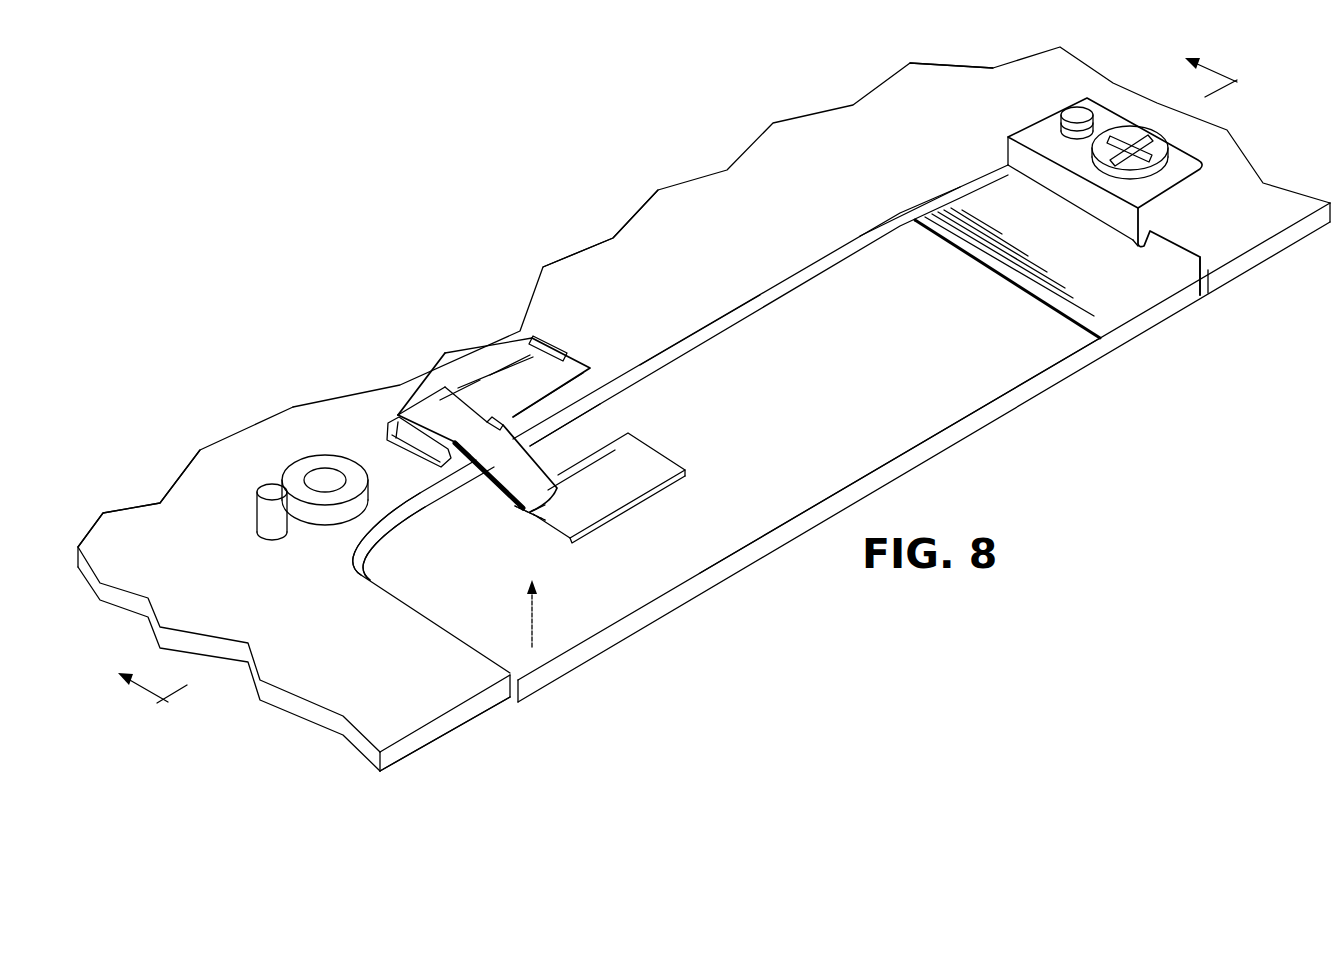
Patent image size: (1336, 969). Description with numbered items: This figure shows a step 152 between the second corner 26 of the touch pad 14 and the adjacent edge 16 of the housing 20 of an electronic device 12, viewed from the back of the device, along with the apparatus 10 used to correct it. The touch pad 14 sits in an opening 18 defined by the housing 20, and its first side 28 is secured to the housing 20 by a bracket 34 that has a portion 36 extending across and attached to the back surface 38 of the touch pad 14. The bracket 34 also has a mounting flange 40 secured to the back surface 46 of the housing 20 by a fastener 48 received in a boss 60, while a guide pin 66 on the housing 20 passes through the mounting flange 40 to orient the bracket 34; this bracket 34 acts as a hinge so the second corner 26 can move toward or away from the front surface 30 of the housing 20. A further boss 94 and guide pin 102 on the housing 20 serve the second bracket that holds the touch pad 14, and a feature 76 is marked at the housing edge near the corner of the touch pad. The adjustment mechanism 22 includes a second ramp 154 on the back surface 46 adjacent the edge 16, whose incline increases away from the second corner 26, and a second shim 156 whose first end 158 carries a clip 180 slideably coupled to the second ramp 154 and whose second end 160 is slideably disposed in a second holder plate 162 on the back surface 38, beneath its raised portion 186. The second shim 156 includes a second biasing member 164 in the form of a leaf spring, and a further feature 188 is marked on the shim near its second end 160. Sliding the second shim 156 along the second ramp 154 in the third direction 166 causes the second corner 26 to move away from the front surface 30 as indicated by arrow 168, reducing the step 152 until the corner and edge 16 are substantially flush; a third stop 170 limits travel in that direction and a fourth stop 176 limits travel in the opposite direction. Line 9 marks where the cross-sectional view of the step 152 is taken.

The line 9- 9 is at (686, 393).
The apparatus 10 is at (513, 456).
The electronic device 12 is at (686, 174).
The touch pad 14 is at (763, 338).
The edge 16 is at (845, 258).
The opening 18 is at (696, 343).
The housing 20 is at (133, 525).
The adjustment mechanism 22 is at (513, 437).
The second corner 26 is at (356, 557).
The first side 28 is at (1203, 294).
The front surface 30 is at (413, 752).
The bracket 34 is at (1006, 285).
The portion 36 is at (977, 207).
The back surface 38 is at (814, 392).
The mounting flange 40 is at (1020, 128).
The back surface 46 is at (630, 257).
The fastener 48 is at (1155, 128).
The boss 60 is at (1165, 205).
The guide pin 66 is at (1070, 105).
The notch 76 is at (513, 705).
The boss 94 is at (287, 468).
The guide pin 102 is at (257, 512).
The step 152 is at (410, 530).
The second ramp 154 is at (478, 358).
The second shim 156 is at (494, 490).
The first end 158 is at (417, 415).
The second end 160 is at (537, 518).
The second holder plate 162 is at (600, 522).
The second biasing member 164 is at (536, 460).
The third direction 166 is at (518, 360).
The arrow 168 is at (528, 612).
The third stop 170 is at (560, 345).
The fourth stop 176 is at (395, 447).
The clip 180 is at (456, 454).
The raised portion 186 is at (640, 435).
The slide foot 188 is at (515, 515).